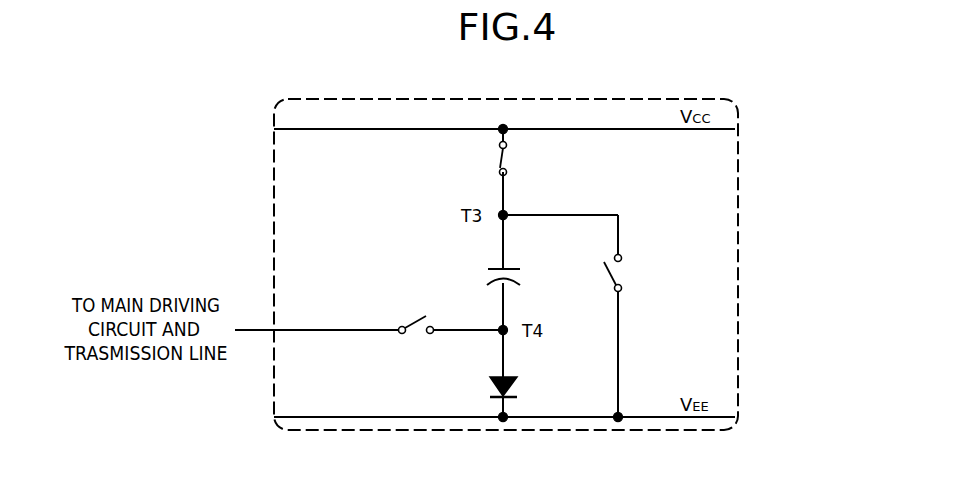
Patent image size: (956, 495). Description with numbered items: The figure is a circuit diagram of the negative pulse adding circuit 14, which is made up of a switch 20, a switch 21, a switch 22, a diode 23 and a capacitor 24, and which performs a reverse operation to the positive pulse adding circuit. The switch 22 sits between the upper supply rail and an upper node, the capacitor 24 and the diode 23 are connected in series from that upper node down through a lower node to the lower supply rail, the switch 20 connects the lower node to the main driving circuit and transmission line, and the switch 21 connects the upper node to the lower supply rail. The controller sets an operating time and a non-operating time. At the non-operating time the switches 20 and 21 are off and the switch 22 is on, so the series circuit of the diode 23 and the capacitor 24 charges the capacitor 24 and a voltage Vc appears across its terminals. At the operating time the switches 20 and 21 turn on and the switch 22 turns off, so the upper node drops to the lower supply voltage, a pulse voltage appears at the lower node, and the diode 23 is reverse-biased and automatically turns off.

The negative pulse adding circuit 14 is at (740, 296).
The switch 20 is at (414, 314).
The switch 21 is at (636, 280).
The switch 22 is at (512, 160).
The diode 23 is at (522, 392).
The capacitor 24 is at (526, 282).